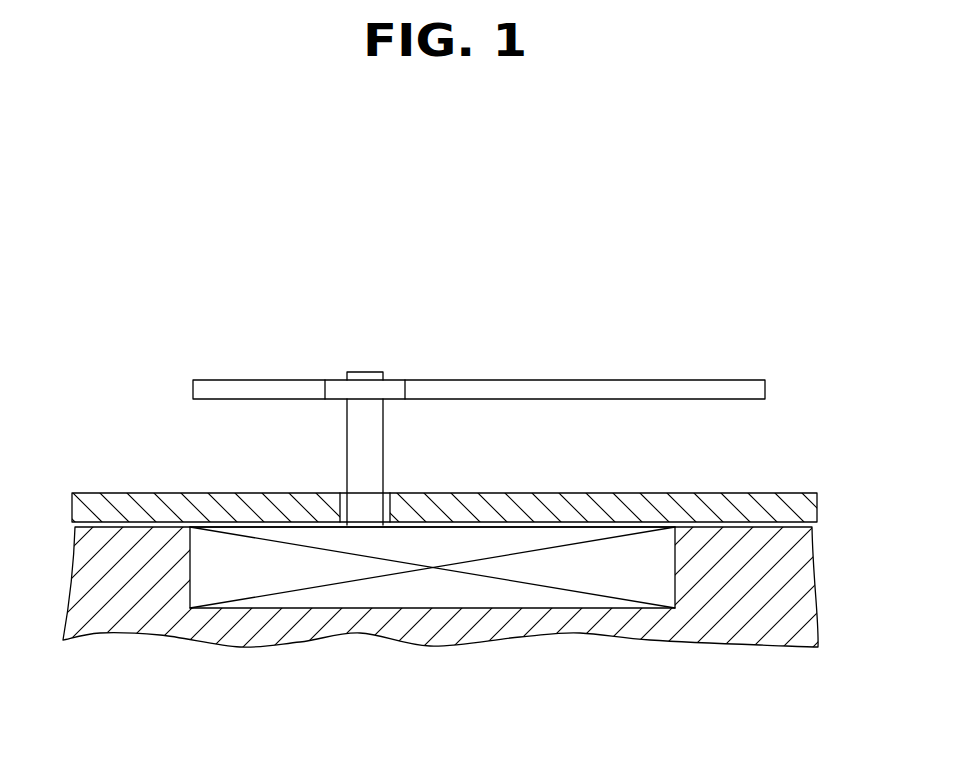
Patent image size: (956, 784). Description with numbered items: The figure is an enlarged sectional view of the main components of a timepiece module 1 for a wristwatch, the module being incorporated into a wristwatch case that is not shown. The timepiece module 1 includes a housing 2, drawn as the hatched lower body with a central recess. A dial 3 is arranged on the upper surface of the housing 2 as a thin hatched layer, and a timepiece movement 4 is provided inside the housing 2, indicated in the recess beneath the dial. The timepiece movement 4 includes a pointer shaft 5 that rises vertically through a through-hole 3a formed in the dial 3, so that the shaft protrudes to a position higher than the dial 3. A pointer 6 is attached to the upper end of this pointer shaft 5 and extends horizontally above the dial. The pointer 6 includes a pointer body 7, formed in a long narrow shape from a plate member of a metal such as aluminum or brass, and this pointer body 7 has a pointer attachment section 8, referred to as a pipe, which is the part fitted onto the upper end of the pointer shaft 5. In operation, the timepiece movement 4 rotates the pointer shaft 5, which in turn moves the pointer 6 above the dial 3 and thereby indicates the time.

The timepiece module 1 is at (104, 455).
The housing 2 is at (735, 618).
The dial 3 is at (452, 480).
The through-hole 3a is at (345, 508).
The timepiece movement 4 is at (435, 598).
The pointer shaft 5 is at (371, 448).
The pointer 6 is at (479, 343).
The pointer body 7 is at (611, 388).
The pointer attachment section 8 is at (332, 378).